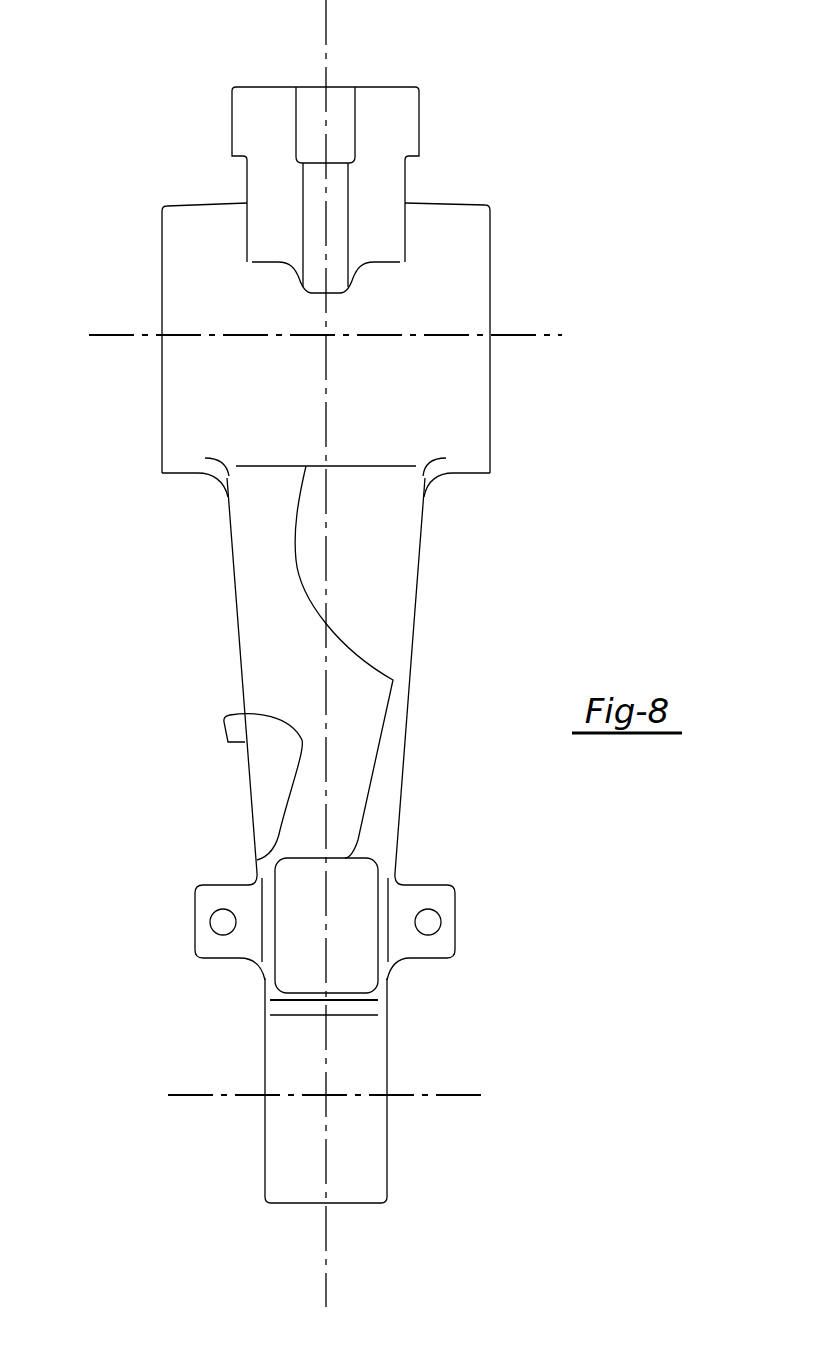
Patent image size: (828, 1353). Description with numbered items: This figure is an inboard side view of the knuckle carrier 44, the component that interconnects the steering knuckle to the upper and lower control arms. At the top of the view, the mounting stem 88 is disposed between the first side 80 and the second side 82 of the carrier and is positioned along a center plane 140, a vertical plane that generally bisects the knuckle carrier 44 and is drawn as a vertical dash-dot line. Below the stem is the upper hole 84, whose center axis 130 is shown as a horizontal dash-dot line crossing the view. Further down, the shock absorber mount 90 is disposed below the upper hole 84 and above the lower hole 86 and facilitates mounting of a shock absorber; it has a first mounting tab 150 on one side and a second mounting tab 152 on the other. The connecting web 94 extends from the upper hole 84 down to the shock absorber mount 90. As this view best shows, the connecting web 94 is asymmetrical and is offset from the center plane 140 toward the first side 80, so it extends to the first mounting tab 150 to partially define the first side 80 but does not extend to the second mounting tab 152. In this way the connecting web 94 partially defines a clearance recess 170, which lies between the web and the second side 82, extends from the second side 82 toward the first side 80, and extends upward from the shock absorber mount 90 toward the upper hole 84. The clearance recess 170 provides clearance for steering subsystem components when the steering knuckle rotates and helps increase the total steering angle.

The knuckle carrier 44 is at (160, 142).
The center plane 140 is at (326, 38).
The center axis 130 is at (108, 333).
The mounting stem 88 is at (419, 112).
The upper hole 84 is at (492, 272).
The first side 80 is at (417, 565).
The second side 82 is at (230, 558).
The connecting web 94 is at (413, 623).
The clearance recess 170 is at (280, 793).
The shock absorber mount 90 is at (447, 882).
The second mounting tab 152 is at (193, 898).
The first mounting tab 150 is at (455, 922).
The lower hole 86 is at (388, 1062).